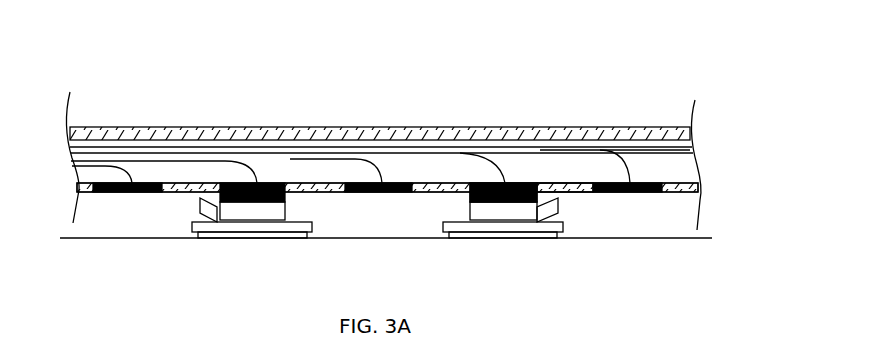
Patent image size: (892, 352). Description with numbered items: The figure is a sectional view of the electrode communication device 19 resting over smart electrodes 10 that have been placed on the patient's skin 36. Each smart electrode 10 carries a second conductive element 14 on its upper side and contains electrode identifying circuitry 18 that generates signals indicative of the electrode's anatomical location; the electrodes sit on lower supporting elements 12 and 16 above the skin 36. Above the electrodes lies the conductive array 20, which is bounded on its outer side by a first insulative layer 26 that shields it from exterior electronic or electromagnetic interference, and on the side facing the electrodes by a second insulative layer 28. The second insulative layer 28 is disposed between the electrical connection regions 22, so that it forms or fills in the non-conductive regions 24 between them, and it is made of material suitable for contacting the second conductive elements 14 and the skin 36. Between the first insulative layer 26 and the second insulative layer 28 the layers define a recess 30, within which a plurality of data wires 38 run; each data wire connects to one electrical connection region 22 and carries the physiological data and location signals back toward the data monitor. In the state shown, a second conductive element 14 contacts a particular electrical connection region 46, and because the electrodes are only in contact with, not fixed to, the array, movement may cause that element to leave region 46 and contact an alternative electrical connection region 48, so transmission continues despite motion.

The smart electrode 10 is at (318, 226).
The substrate of LED package 12 is at (454, 245).
The second conductive element 14 is at (291, 197).
The wire bond / contact 16 is at (200, 210).
The electrode identifying circuitry 18 is at (464, 212).
The electrode communication device 19 is at (628, 86).
The conductive array 20 is at (715, 189).
The electrical connection region 22 is at (356, 183).
The non-conductive region 24 is at (88, 191).
The first insulative layer 26 is at (422, 128).
The second insulative layer 28 is at (583, 194).
The recess 30 is at (677, 152).
The patient's skin 36 is at (76, 244).
The plurality of data wires 38 is at (63, 143).
The electrical connection region 46 is at (530, 183).
The alternative electrical connection region 48 is at (649, 192).